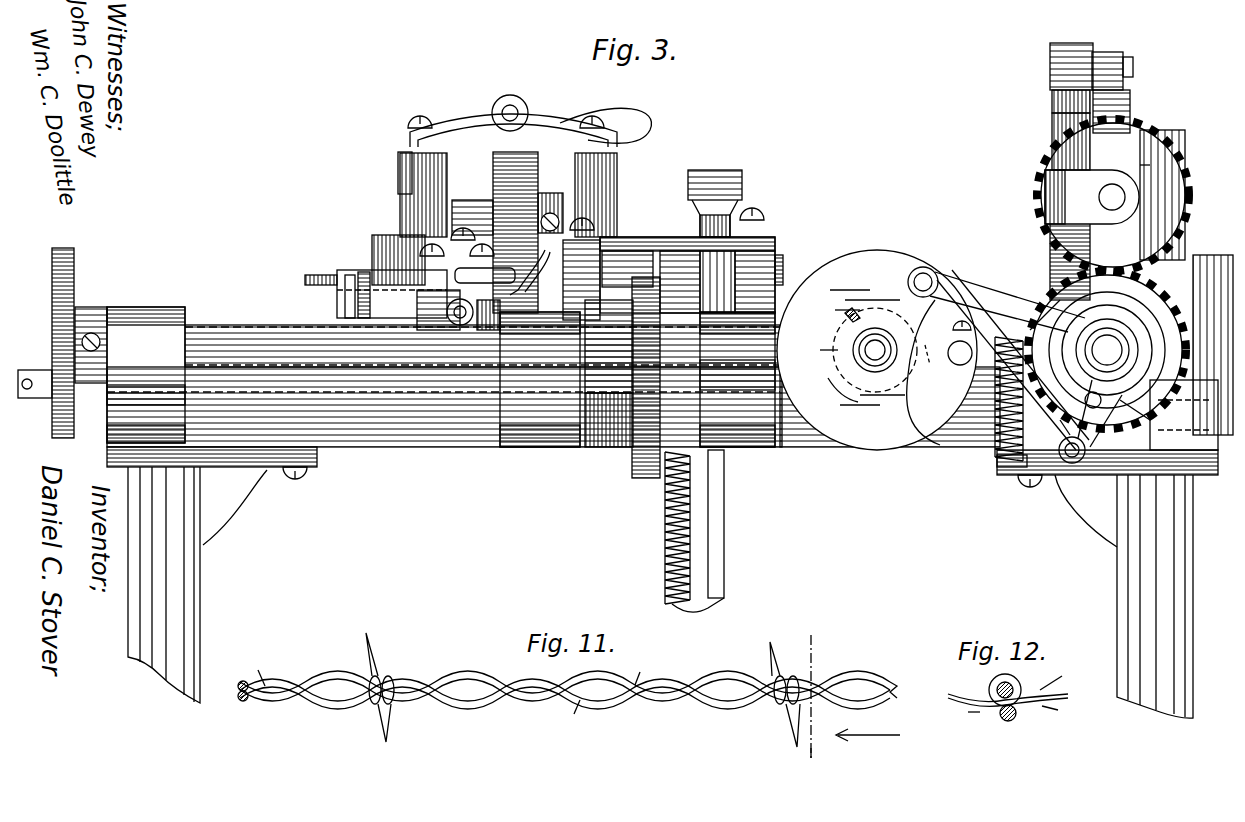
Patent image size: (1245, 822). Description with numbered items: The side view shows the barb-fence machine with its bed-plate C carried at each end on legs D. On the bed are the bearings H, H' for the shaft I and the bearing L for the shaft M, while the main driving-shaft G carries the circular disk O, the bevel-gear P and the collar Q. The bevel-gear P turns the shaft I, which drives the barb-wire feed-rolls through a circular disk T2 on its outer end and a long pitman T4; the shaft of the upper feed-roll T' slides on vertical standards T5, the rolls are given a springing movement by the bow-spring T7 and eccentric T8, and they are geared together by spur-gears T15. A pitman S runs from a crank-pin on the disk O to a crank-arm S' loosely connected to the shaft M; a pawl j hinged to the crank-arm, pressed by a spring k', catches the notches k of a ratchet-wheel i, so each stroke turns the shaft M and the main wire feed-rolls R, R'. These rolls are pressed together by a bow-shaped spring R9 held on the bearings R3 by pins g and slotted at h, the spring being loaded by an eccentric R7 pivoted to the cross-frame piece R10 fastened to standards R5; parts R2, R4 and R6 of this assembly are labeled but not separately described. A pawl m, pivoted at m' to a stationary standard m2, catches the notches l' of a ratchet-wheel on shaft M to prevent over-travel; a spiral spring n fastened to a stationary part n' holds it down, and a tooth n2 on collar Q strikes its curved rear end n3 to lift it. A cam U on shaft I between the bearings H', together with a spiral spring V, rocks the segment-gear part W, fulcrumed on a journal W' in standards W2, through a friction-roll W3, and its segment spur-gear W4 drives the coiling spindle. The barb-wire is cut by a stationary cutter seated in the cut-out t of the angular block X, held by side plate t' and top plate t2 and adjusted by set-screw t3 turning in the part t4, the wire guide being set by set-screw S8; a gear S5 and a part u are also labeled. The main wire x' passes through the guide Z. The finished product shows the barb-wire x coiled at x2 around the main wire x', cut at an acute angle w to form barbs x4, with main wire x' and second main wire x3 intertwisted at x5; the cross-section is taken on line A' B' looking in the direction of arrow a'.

In FIG. 3, the bed-plate C is at (553, 407).
In FIG. 3, the legs D is at (158, 600).
In FIG. 3, the bearing H is at (146, 375).
In FIG. 3, the bearings H' is at (637, 379).
In FIG. 3, the shaft I is at (248, 334).
In FIG. 3, the upper barb-wire feed-roll T' is at (500, 232).
In FIG. 3, the circular disk T2 is at (74, 275).
In FIG. 3, the pitman T4 is at (42, 398).
In FIG. 3, the vertical standards T5 is at (400, 173).
In FIG. 3, the bow-spring T7 is at (402, 152).
In FIG. 3, the eccentric T8 is at (495, 103).
In FIG. 3, the spur-gears T15 is at (530, 185).
In FIG. 3, the gear S5 is at (447, 312).
In FIG. 3, the set-screw S8 is at (462, 220).
In FIG. 3, the cut-out t is at (364, 286).
In FIG. 3, the side plate t' is at (485, 281).
In FIG. 3, the top plate t2 is at (378, 236).
In FIG. 3, the set-screw t3 is at (321, 269).
In FIG. 3, the part of block X t4 is at (350, 275).
In FIG. 3, the angular stationary block X is at (337, 305).
In FIG. 3, the bevel-gear P is at (609, 373).
In FIG. 3, the cam U is at (634, 472).
In FIG. 3, the spiral spring V is at (680, 531).
In FIG. 3, the rocking segment-gear part W is at (687, 261).
In FIG. 3, the journal W' is at (775, 246).
In FIG. 3, the standards W2 is at (669, 280).
In FIG. 3, the friction-roll W3 is at (627, 265).
In FIG. 3, the segment spur-gear W4 is at (722, 170).
In FIG. 3, the slot h is at (552, 254).
In FIG. 3, the pins g is at (540, 320).
In FIG. 3, the circular disk O is at (870, 268).
In FIG. 3, the main driving-shaft G is at (875, 350).
In FIG. 3, the collar Q is at (819, 350).
In FIG. 3, the spiral spring n is at (994, 467).
In FIG. 3, the stationary part n' is at (1015, 489).
In FIG. 3, the cog or tooth n2 is at (845, 313).
In FIG. 3, the rear curved end n3 is at (850, 400).
In FIG. 3, the pawl or dog m is at (961, 372).
In FIG. 3, the pivot m' is at (942, 380).
In FIG. 3, the stationary standard m2 is at (932, 344).
In FIG. 3, the screw u is at (962, 319).
In FIG. 3, the bearing L is at (1030, 325).
In FIG. 3, the notches l' is at (1042, 298).
In FIG. 3, the shaft M is at (1107, 350).
In FIG. 3, the notches k is at (1104, 373).
In FIG. 3, the spring k' is at (1120, 417).
In FIG. 3, the ratchet-wheel i is at (1066, 421).
In FIG. 3, the pawl j is at (1160, 420).
In FIG. 3, the link or pitman S is at (1018, 399).
In FIG. 3, the crank-arm S' is at (1184, 415).
In FIG. 3, the guide Z is at (1215, 345).
In FIG. 3, the lower main wire feed-rolls R is at (1151, 165).
In FIG. 3, the upper main wire feed-roll R' is at (1132, 350).
In FIG. 3, the arm R2 is at (1098, 197).
In FIG. 3, the bearings R3 is at (1112, 182).
In FIG. 3, the gear R4 is at (1175, 152).
In FIG. 3, the standards R5 is at (1052, 127).
In FIG. 3, the screw R6 is at (1050, 250).
In FIG. 3, the eccentric R7 is at (1107, 52).
In FIG. 3, the bow-shaped spring R9 is at (1130, 110).
In FIG. 3, the cross-frame piece R10 is at (1050, 60).
In FIG. 11, the barb-wire x is at (565, 699).
In FIG. 12, the barb-wire x is at (1008, 687).
In FIG. 11, the main wire x' is at (567, 677).
In FIG. 12, the main wire x' is at (1006, 681).
In FIG. 11, the barb-wire coil x2 is at (388, 678).
In FIG. 12, the barb-wire coil x2 is at (997, 686).
In FIG. 11, the second main wire x3 is at (416, 691).
In FIG. 12, the second main wire x3 is at (1015, 716).
In FIG. 11, the barbs x4 is at (368, 662).
In FIG. 12, the barbs x4 is at (1059, 676).
In FIG. 11, the intertwisted double strand x5 is at (642, 669).
In FIG. 11, the angular cut w is at (370, 640).
In FIG. 12, the angular cut w is at (1010, 711).
In FIG. 11, the section line A' is at (806, 687).
In FIG. 11, the section line B' is at (805, 762).
In FIG. 11, the arrow a' is at (868, 728).